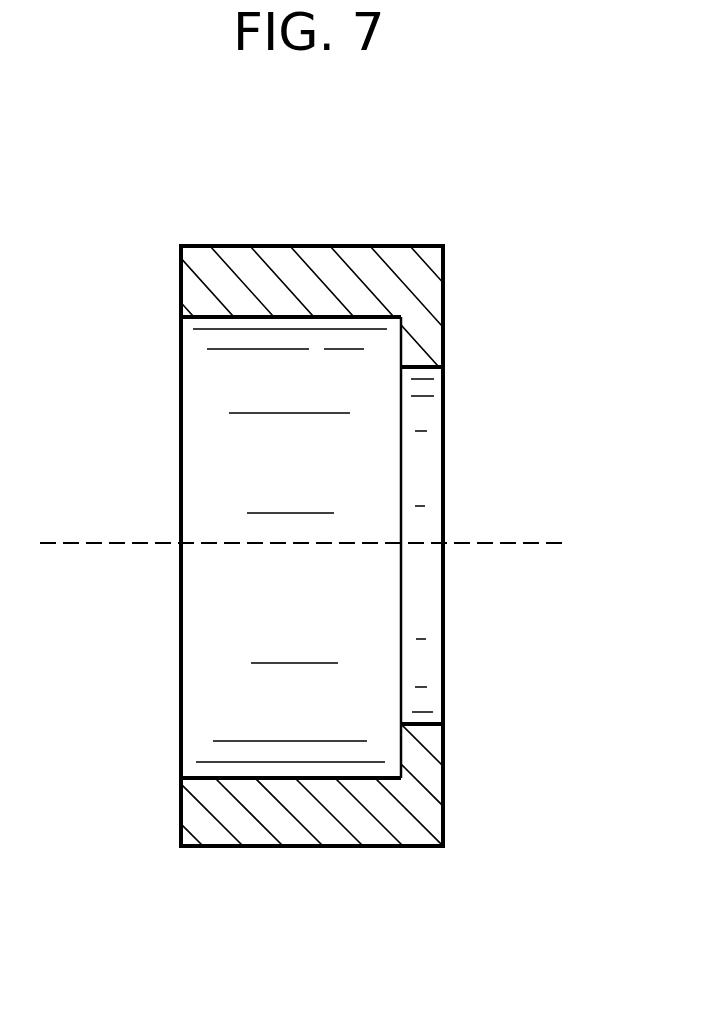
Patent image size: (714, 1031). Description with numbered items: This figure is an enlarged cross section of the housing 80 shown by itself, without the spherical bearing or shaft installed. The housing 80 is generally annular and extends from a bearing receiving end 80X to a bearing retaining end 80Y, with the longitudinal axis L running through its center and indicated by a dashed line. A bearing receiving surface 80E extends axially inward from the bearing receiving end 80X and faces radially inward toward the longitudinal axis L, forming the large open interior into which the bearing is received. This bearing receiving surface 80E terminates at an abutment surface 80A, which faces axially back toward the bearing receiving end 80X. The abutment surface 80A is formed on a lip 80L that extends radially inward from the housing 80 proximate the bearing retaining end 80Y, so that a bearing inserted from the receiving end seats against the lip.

The housing 80 is at (535, 184).
The bearing receiving end 80X is at (181, 266).
The bearing retaining end 80Y is at (443, 280).
The lip 80L is at (430, 340).
The bearing receiving surface 80E is at (260, 318).
The abutment surface 80A is at (401, 345).
The longitudinal axis L is at (470, 542).